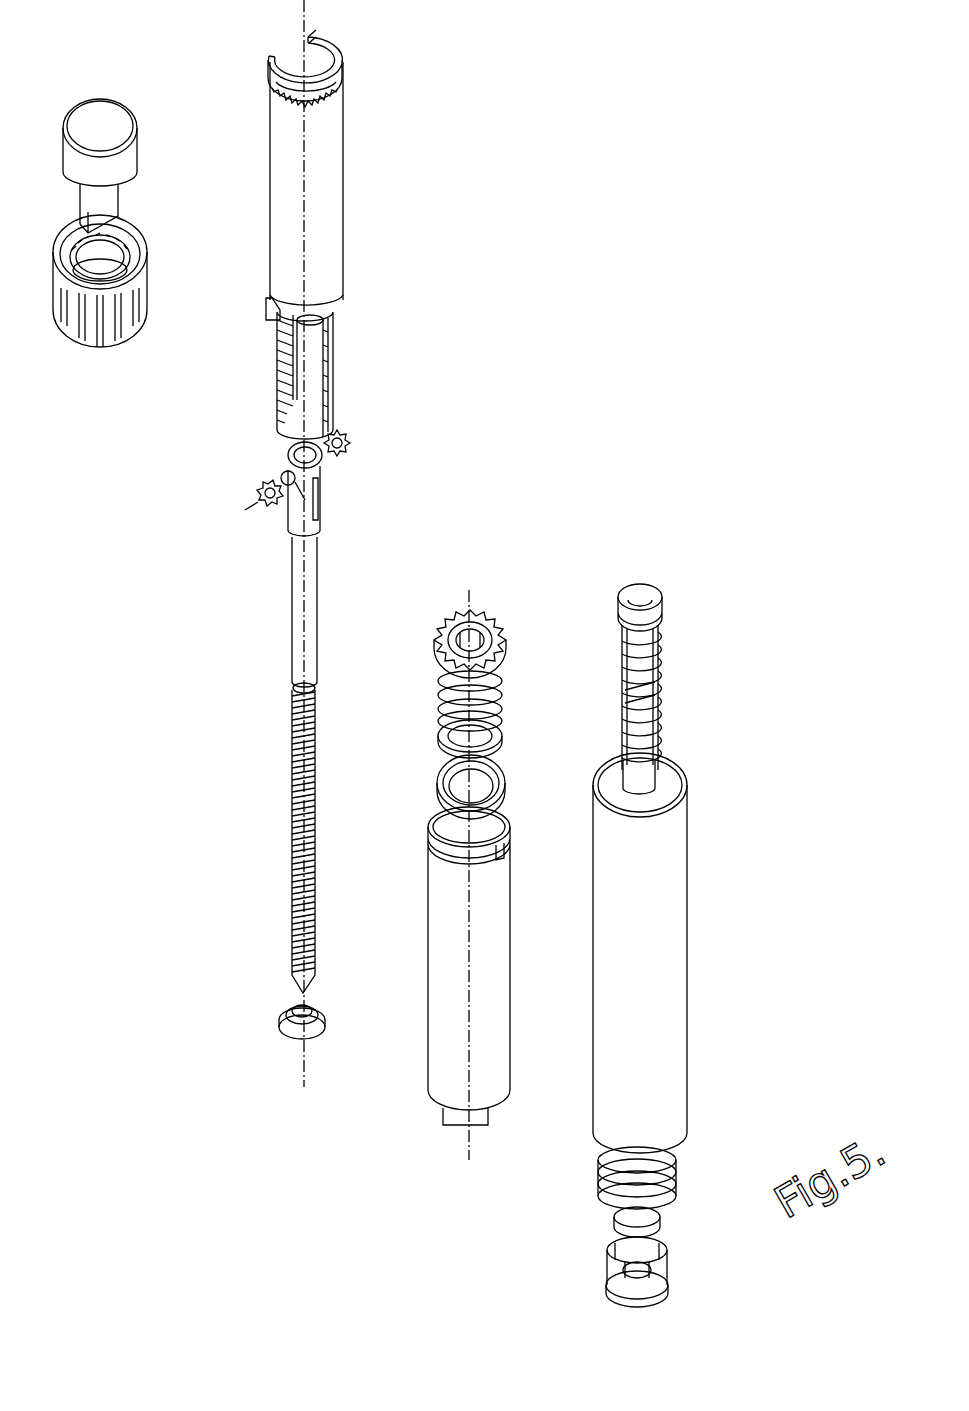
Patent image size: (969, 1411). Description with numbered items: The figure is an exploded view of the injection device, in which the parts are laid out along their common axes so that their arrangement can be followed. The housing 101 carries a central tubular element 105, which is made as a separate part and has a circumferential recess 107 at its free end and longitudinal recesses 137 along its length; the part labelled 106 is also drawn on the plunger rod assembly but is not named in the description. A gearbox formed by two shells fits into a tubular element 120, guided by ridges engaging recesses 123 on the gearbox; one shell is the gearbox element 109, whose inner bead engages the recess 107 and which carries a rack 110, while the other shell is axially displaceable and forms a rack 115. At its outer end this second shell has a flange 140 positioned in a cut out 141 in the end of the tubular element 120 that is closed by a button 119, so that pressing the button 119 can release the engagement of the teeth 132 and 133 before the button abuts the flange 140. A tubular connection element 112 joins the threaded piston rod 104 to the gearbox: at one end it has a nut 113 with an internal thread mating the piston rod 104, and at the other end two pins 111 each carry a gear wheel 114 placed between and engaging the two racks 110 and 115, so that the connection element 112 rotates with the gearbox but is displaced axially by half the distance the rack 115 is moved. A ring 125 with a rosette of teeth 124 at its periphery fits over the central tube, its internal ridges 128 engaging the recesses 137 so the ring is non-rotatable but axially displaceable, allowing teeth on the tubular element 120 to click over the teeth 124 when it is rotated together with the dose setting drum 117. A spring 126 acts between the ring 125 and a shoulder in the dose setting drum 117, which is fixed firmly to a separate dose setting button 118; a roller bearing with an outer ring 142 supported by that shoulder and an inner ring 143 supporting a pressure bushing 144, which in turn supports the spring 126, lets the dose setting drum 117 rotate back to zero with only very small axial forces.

The housing 101 is at (683, 990).
The threaded piston rod 104 is at (313, 822).
The tubular element 105 is at (663, 657).
The plunger rod 106 is at (640, 683).
The circumferential recess 107 is at (663, 610).
The gearbox element 109 is at (333, 403).
The rack 110 is at (300, 370).
The pins 111 is at (317, 497).
The tubular connection element 112 is at (315, 587).
The nut 113 is at (315, 688).
The gear wheel 114 is at (345, 450).
The rack 115 is at (297, 360).
The dose setting drum 117 is at (512, 930).
The dose setting button 118 is at (115, 333).
The button 119 is at (133, 108).
The tubular element 120 is at (343, 172).
The recesses 123 is at (325, 350).
The teeth 124 is at (487, 625).
The ring 125 is at (510, 652).
The spring 126 is at (498, 703).
The internal ridges 128 is at (468, 620).
The teeth 132 is at (333, 87).
The teeth 133 is at (110, 240).
The longitudinal recesses 137 is at (623, 683).
The flange 140 is at (270, 300).
The cut out 141 is at (290, 45).
The outer ring 142 is at (502, 805).
The inner ring 143 is at (477, 770).
The pressure bushing 144 is at (500, 733).